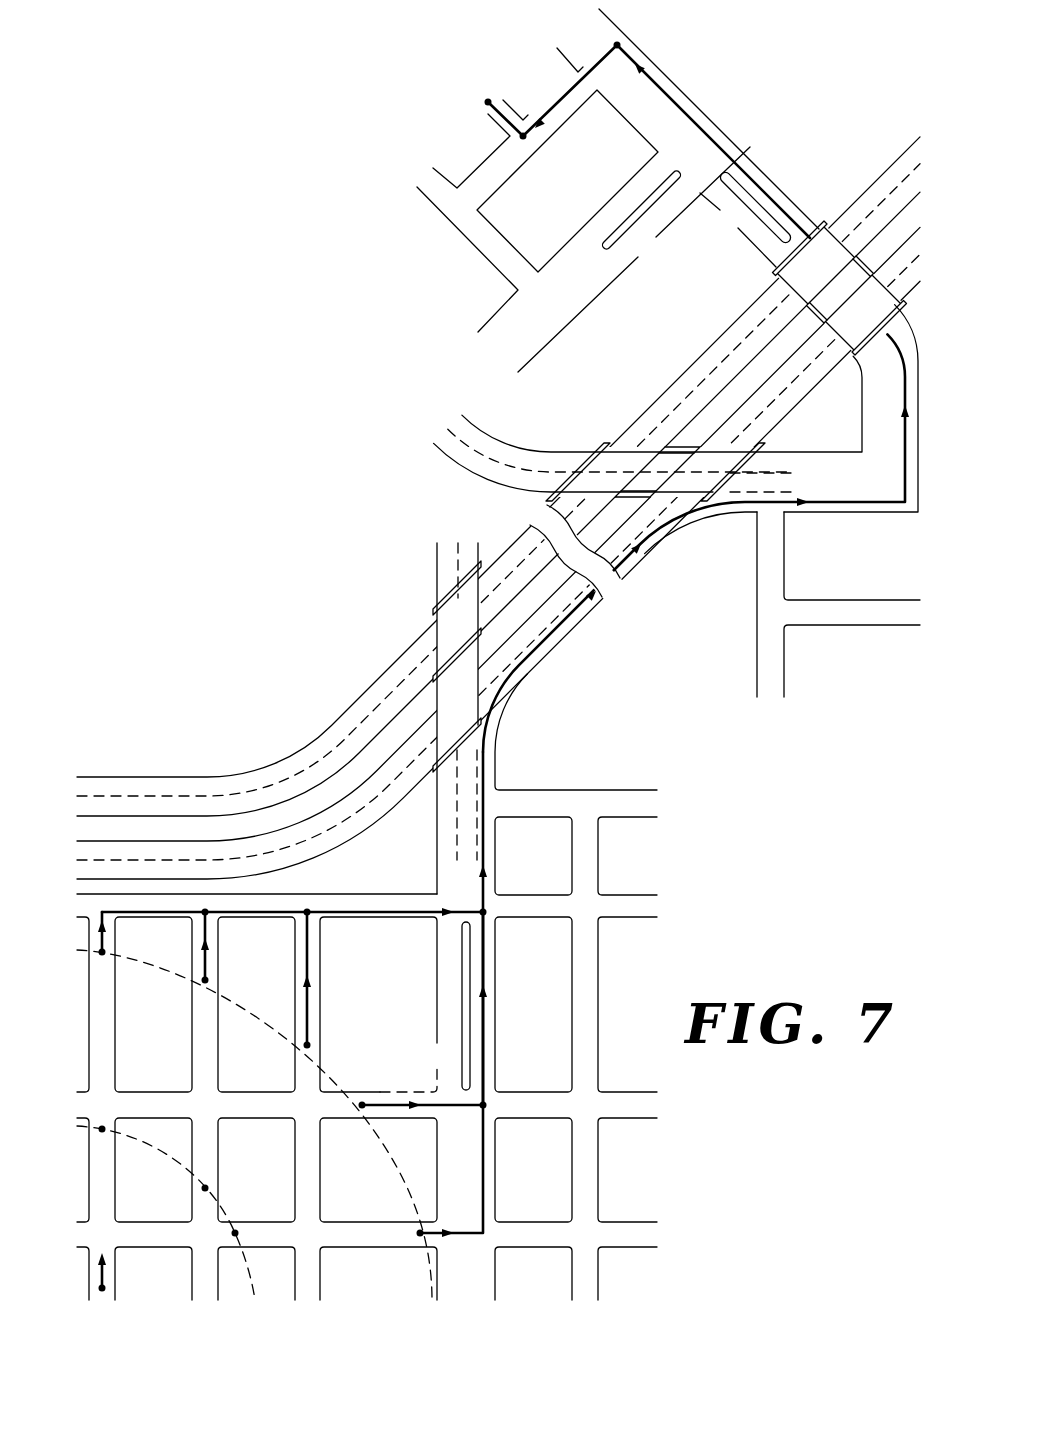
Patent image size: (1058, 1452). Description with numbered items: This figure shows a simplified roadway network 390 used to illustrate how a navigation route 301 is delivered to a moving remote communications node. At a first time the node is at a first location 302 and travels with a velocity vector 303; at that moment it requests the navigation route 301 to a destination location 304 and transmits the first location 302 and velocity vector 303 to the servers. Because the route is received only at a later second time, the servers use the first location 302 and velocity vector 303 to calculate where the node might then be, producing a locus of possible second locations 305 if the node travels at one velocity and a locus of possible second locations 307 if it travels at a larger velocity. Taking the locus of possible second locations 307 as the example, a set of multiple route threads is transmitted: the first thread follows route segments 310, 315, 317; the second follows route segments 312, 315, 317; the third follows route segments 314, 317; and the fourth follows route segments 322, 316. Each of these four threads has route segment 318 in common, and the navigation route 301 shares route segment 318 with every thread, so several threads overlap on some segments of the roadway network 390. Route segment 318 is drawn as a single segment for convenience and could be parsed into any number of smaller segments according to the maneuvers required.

The navigation route 301 is at (737, 584).
The first location 302 is at (104, 1288).
The velocity vector 303 is at (105, 1259).
The destination location 304 is at (488, 102).
The locus of possible second locations 305 is at (102, 1129).
The locus of possible second locations 307 is at (102, 952).
The route segment 310 is at (149, 912).
The route segment 312 is at (206, 943).
The route segment 314 is at (308, 955).
The route segment 315 is at (278, 912).
The route segment 316 is at (484, 965).
The route segment 317 is at (403, 919).
The route segment 318 is at (491, 772).
The route segment 322 is at (458, 1107).
The roadway network 390 is at (485, 366).